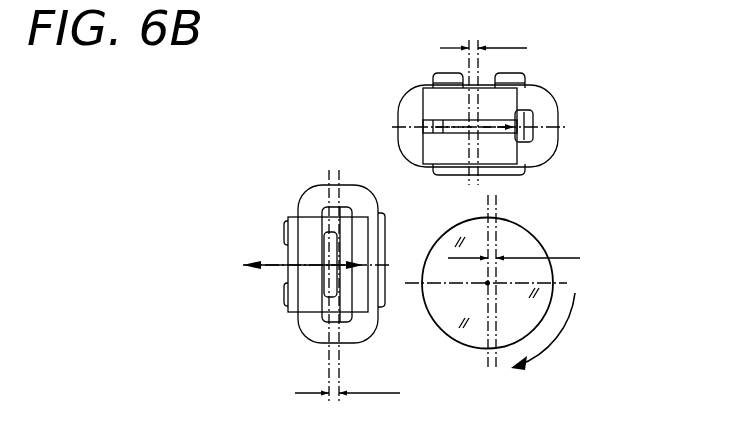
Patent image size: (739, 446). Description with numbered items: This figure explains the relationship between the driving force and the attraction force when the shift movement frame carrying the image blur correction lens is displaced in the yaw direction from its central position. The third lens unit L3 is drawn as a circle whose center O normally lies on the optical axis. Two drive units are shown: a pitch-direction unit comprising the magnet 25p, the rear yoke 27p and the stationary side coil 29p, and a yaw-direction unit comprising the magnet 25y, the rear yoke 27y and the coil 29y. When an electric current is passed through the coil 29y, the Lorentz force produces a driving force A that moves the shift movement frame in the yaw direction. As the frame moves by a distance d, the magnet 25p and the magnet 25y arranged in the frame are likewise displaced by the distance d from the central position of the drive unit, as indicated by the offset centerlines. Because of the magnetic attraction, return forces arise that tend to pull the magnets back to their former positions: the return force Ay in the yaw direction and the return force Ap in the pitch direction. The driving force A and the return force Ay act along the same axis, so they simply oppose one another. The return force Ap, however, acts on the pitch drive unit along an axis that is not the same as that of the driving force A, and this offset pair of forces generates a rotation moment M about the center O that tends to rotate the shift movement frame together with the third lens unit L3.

The magnet 25p is at (435, 102).
The rear yoke 27p is at (440, 75).
The coil 29p is at (548, 117).
The return force Ap is at (498, 122).
The magnet 25y is at (302, 228).
The rear yoke 27y is at (285, 295).
The coil 29y is at (315, 330).
The return force Ay is at (345, 263).
The driving force A is at (273, 262).
The third lens unit L3 is at (520, 235).
The center O is at (478, 297).
The rotation moment M is at (557, 342).
The distance d is at (437, 208).